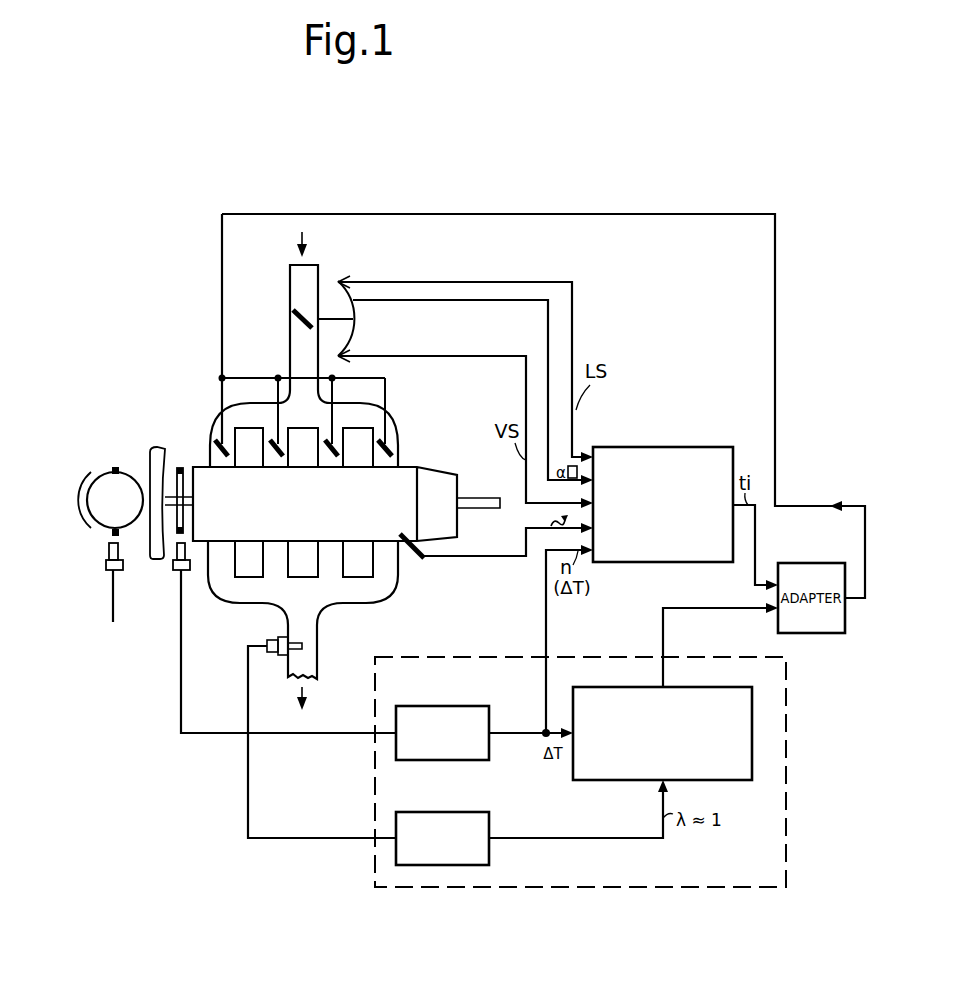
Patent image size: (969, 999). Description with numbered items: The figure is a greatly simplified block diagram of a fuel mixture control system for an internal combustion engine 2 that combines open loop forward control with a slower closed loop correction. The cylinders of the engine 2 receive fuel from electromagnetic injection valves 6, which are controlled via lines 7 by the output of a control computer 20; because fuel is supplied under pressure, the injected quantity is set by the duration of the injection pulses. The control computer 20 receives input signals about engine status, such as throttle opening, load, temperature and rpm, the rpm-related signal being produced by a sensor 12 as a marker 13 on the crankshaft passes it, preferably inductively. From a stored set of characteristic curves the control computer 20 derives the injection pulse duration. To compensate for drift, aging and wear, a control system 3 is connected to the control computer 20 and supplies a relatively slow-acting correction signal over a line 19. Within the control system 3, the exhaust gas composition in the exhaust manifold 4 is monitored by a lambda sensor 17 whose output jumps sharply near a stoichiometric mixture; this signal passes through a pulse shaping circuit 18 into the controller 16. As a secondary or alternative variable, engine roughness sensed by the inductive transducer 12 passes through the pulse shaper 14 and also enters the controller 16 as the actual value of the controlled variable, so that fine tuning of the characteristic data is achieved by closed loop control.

The engine 2 is at (411, 478).
The control system 3 is at (613, 862).
The exhaust manifold 4 is at (310, 658).
The electromagnetic injection valves 6 is at (390, 442).
The lines 7 is at (515, 214).
The sensor 12 is at (108, 566).
The marker 13 is at (115, 467).
The pulse shaper 14 is at (453, 718).
The controller 16 is at (738, 712).
The lambda sensor 17 is at (290, 640).
The pulse shaping circuit 18 is at (462, 822).
The line 19 is at (663, 636).
The control computer 20 is at (670, 468).